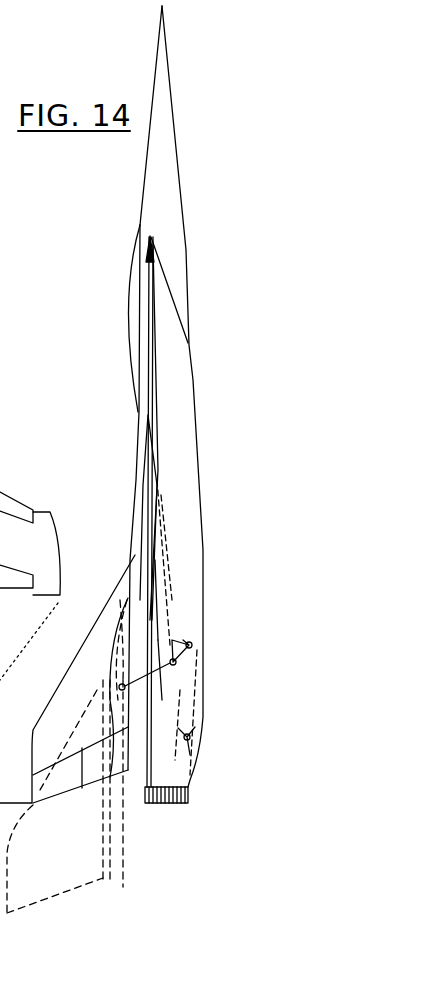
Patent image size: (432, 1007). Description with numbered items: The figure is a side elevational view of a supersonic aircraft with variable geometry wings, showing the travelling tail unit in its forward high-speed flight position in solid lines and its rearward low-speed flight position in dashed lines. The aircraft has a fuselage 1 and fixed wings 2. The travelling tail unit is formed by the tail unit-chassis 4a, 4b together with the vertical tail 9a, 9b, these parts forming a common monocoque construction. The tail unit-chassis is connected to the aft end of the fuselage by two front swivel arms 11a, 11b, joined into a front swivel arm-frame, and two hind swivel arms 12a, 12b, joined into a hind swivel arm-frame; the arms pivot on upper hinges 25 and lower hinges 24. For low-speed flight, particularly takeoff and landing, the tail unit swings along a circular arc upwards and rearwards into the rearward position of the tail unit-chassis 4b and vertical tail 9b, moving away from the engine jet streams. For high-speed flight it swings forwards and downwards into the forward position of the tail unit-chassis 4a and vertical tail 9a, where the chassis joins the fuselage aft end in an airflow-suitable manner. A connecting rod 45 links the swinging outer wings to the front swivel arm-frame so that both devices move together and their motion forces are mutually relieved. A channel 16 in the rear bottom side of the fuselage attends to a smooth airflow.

The fuselage 1 is at (170, 218).
The fixed wings 2 is at (150, 390).
The tail unit-chassis in its forward high-speed flight position 4a is at (137, 580).
The tail unit-chassis in its rearward low-speed flight position 4b is at (122, 887).
The upper hinges of the swivel arms or of the swivel arm-frames 25 is at (135, 575).
The connecting rod between the travelling tail unit and the variable geometry wings 45 is at (168, 537).
The front swivel arms in their forward high-speed flight position 11a is at (157, 600).
The front swivel arms in their rearward low-speed flight position 11b is at (162, 662).
The hind swivel arms in their forward high-speed flight position 12a is at (168, 708).
The hind swivel arms in their rearward low-speed flight position 12b is at (163, 750).
The lower hinges of the swivel arms or of the swivel arm-frames 24 is at (191, 643).
The vertical tail in its forward high-speed flight position 9a is at (58, 728).
The vertical tail in its rearward low-speed flight position 9b is at (62, 865).
The channel in the rear bottom side of the fuselage 16 is at (202, 725).